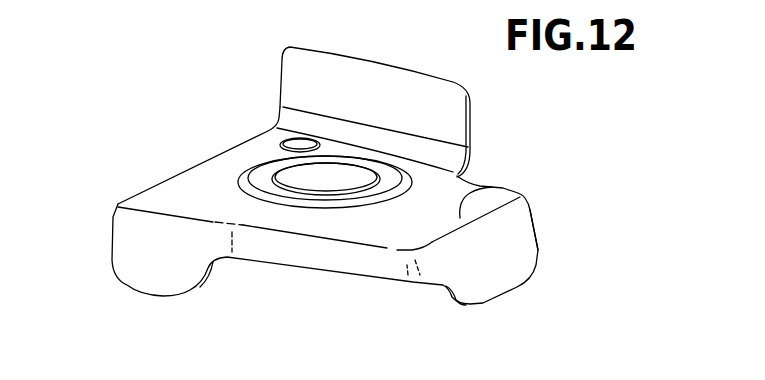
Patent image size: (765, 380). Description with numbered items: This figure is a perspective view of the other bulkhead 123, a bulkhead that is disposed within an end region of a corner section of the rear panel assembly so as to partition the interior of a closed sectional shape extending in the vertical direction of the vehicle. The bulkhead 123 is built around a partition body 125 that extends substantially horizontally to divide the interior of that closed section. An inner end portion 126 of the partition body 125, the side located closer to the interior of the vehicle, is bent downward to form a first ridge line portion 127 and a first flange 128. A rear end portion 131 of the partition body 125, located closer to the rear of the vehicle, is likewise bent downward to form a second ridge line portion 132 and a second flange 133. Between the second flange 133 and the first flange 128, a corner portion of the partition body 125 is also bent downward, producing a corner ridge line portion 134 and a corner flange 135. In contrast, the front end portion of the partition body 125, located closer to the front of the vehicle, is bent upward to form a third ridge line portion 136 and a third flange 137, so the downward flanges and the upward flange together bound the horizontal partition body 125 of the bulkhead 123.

The other bulkhead 123 is at (210, 118).
The partition body 125 is at (230, 182).
The inner end portion 126 is at (472, 188).
The first ridge line portion 127 is at (496, 213).
The first flange 128 is at (522, 283).
The rear end portion 131 is at (218, 217).
The second ridge line portion 132 is at (279, 235).
The second flange 133 is at (248, 250).
The corner ridge line portion 134 is at (397, 250).
The corner flange 135 is at (410, 286).
The third ridge line portion 136 is at (282, 115).
The third flange 137 is at (355, 65).